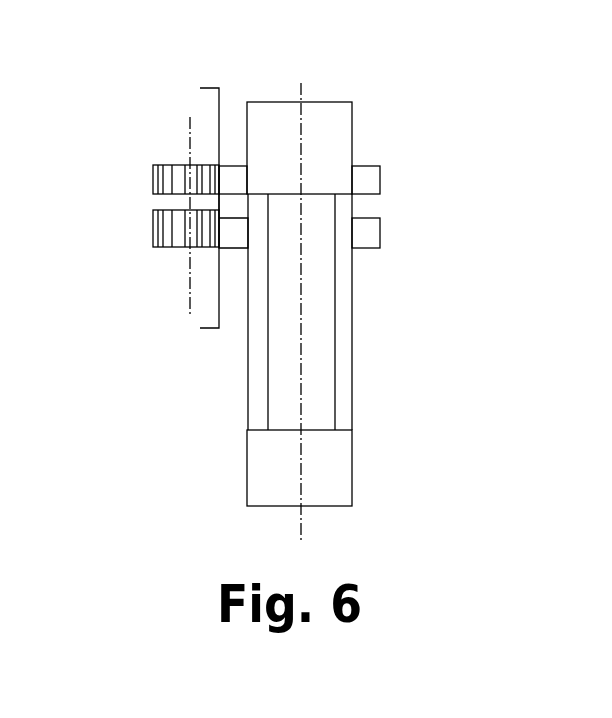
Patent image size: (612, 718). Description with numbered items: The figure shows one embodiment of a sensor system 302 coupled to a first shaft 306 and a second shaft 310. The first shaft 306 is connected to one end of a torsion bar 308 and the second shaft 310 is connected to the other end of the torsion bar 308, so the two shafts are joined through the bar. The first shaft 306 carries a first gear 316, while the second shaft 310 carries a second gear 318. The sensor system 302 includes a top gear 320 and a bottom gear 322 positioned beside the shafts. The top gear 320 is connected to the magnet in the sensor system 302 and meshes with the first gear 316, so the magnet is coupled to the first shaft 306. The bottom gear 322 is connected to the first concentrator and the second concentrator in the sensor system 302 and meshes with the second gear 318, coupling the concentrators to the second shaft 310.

The sensor system 302 is at (163, 127).
The first shaft 306 is at (345, 128).
The torsion bar 308 is at (323, 323).
The second shaft 310 is at (352, 469).
The first gear 316 is at (372, 178).
The second gear 318 is at (372, 233).
The top gear 320 is at (167, 178).
The bottom gear 322 is at (167, 225).